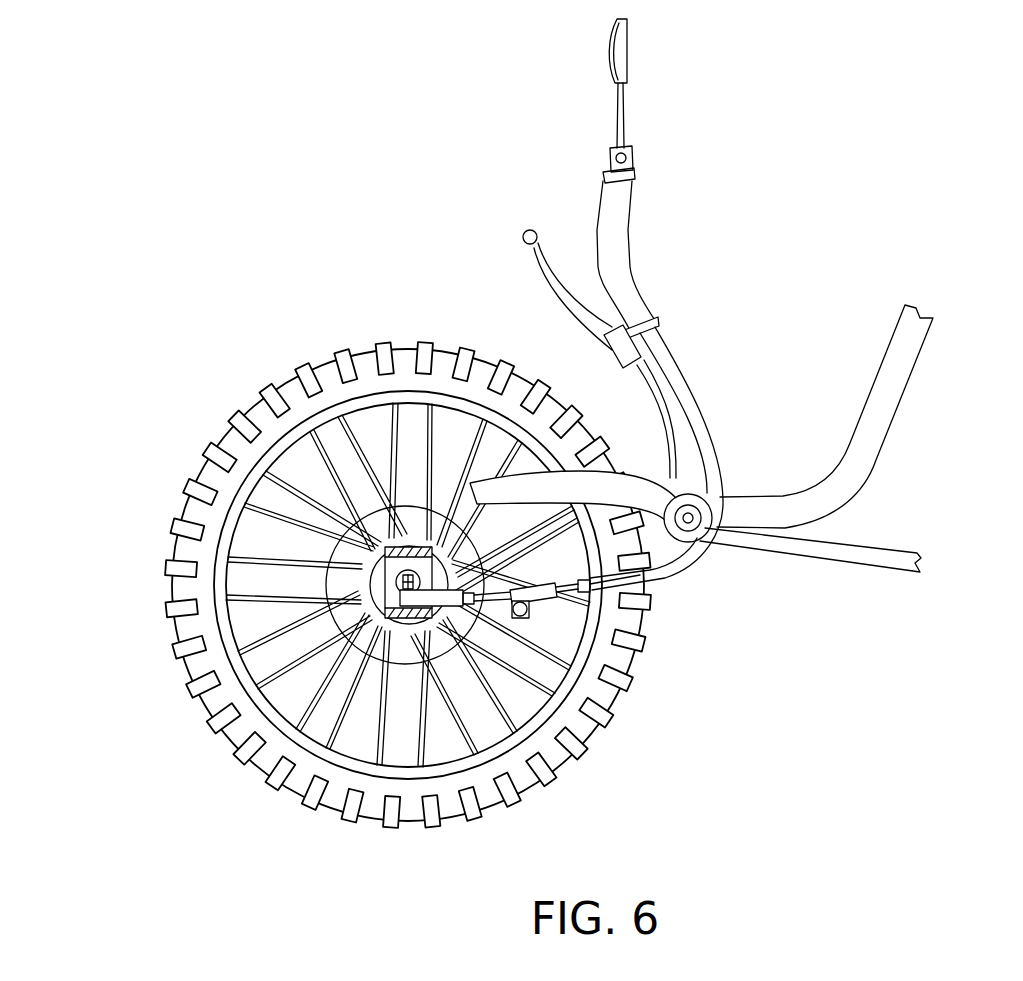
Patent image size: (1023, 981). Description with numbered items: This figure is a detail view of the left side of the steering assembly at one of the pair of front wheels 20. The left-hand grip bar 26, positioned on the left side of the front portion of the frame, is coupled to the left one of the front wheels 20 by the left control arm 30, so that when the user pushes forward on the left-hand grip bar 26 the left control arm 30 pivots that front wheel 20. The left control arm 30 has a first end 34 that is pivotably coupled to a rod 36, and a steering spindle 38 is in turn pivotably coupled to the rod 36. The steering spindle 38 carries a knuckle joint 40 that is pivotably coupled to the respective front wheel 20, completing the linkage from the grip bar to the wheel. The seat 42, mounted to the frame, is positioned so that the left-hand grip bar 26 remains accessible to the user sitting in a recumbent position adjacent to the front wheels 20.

The front wheels 20 is at (292, 368).
The left-hand grip bar 26 is at (623, 215).
The left control arm 30 is at (697, 552).
The first end 34 is at (585, 592).
The rod 36 is at (490, 603).
The steering spindle 38 is at (402, 594).
The knuckle joint 40 is at (388, 588).
The seat 42 is at (907, 353).